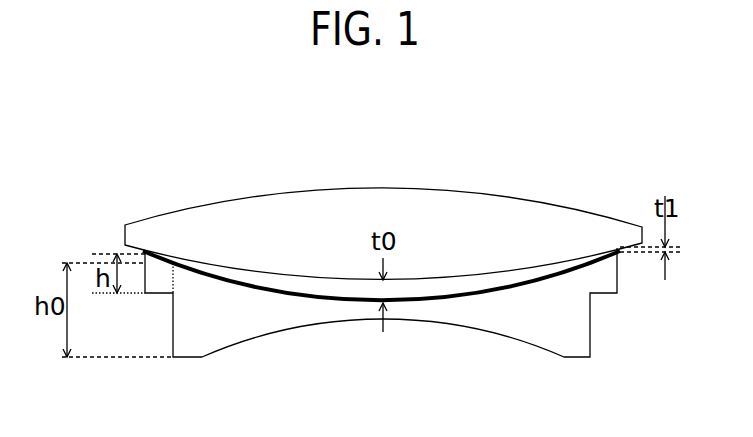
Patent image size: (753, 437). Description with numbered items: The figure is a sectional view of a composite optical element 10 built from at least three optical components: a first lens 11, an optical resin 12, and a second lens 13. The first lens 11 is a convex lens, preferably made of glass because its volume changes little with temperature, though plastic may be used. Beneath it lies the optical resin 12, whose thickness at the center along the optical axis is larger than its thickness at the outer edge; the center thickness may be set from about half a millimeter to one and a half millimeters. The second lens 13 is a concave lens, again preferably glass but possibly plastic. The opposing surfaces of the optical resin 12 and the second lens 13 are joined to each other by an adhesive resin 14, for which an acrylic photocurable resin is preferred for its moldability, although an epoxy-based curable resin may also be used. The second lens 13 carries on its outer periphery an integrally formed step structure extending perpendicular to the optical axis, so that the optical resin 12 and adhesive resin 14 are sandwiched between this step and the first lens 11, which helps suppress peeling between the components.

The composite optical element 10 is at (398, 126).
The first lens 11 is at (559, 235).
The optical resin 12 is at (516, 275).
The second lens 13 is at (503, 318).
The adhesive resin 14 is at (258, 290).